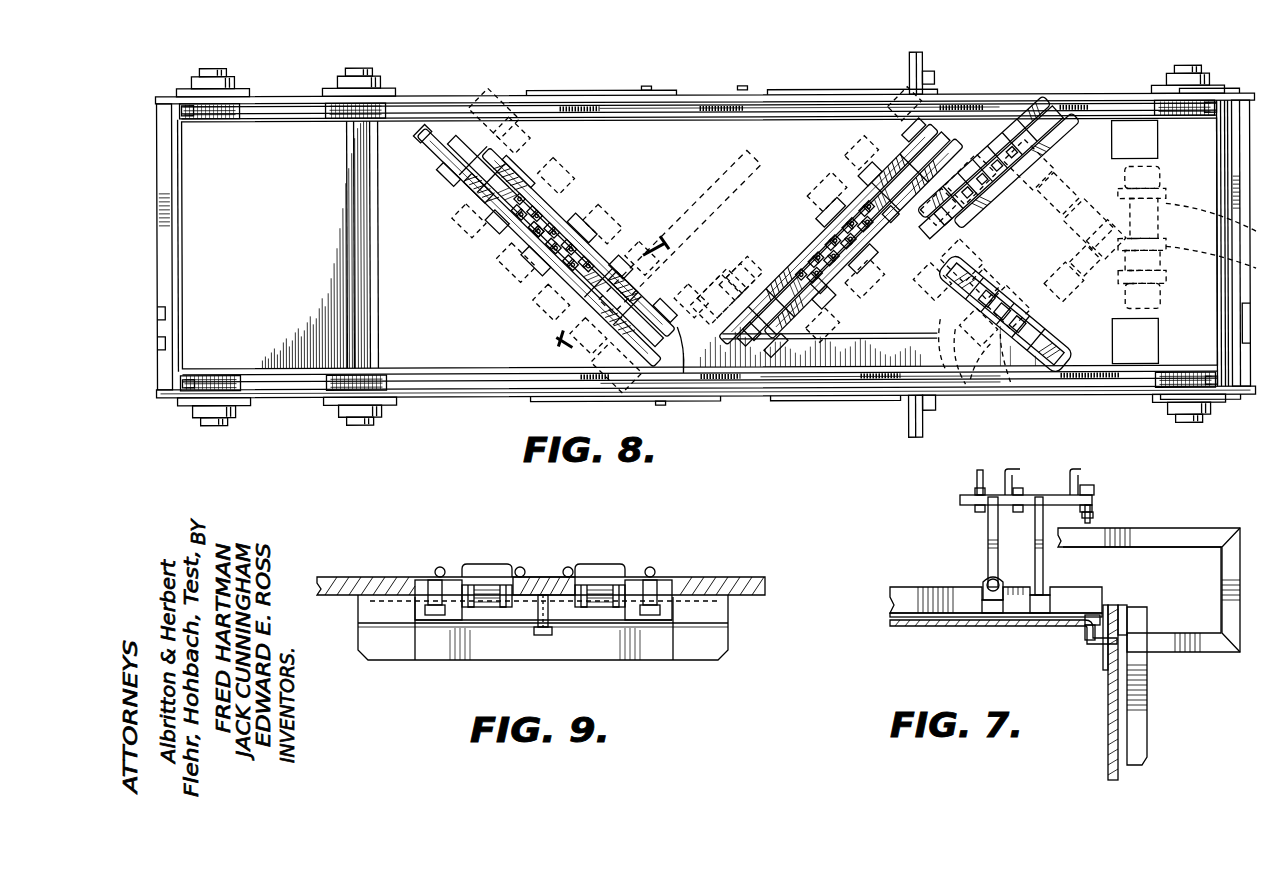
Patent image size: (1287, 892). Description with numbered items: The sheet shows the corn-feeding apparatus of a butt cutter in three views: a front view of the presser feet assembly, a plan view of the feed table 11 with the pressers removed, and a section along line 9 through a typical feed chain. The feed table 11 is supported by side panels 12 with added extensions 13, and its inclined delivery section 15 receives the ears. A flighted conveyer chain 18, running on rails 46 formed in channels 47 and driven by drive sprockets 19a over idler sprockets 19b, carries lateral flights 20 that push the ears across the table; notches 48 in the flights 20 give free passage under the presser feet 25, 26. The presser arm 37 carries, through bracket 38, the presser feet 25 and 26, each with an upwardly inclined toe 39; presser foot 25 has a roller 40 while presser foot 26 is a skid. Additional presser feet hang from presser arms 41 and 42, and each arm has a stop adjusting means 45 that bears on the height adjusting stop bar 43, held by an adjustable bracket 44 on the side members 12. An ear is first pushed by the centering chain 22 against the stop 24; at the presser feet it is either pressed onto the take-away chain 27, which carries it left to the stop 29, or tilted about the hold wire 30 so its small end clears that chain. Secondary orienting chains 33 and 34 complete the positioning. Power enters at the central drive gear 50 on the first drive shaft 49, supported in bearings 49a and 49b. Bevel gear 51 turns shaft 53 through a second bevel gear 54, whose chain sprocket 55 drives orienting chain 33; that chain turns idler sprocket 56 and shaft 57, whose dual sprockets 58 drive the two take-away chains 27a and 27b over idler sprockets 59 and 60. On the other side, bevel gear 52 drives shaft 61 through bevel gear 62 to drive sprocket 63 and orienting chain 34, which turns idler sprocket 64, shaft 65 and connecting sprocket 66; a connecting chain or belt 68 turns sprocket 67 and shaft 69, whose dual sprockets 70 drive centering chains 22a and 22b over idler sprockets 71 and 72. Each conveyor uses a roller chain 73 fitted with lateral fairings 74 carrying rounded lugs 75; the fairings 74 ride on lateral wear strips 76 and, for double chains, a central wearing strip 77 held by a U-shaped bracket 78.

In FIG. 8, the section line 9— 9 is at (612, 297).
In FIG. 8, the feed table 11 is at (657, 132).
In FIG. 9, the feed table 11 is at (750, 577).
In FIG. 7, the feed table 11 is at (910, 627).
In FIG. 8, the side panels 12 is at (1135, 98).
In FIG. 7, the side panels 12 is at (1108, 705).
In FIG. 8, the extensions 13 is at (437, 94).
In FIG. 8, the delivery section 15 is at (292, 120).
In FIG. 8, the chain 18 is at (180, 104).
In FIG. 7, the chain 18 is at (1085, 627).
In FIG. 8, the drive sprockets 19a is at (1208, 96).
In FIG. 8, the idler sprockets 19b is at (185, 95).
In FIG. 8, the flights 20 is at (157, 148).
In FIG. 7, the flights 20 is at (913, 585).
In FIG. 8, the centering chain 22 is at (555, 229).
In FIG. 9, the centering chain 22 is at (684, 560).
In FIG. 8, the centering chain 22a is at (583, 220).
In FIG. 8, the centering chain 22b is at (542, 273).
In FIG. 8, the stop 24 is at (775, 397).
In FIG. 7, the stop 24 is at (1128, 615).
In FIG. 7, the presser foot 25 is at (988, 530).
In FIG. 7, the presser foot 26 is at (1035, 530).
In FIG. 8, the take-away conveyer chain 27 is at (842, 239).
In FIG. 8, the take-away chain 27a is at (825, 198).
In FIG. 8, the take-away chain 27b is at (880, 252).
In FIG. 8, the stop 29 is at (710, 92).
In FIG. 8, the hold wire 30 is at (900, 338).
In FIG. 7, the hold wire 30 is at (1015, 617).
In FIG. 8, the secondary orienting chain 33 is at (995, 150).
In FIG. 8, the secondary orienting chain 34 is at (1010, 367).
In FIG. 7, the presser arm 37 is at (977, 480).
In FIG. 7, the bracket 38 is at (962, 500).
In FIG. 7, the toe 39 is at (988, 548).
In FIG. 7, the roller 40 is at (983, 580).
In FIG. 7, the presser arm 41 is at (1017, 475).
In FIG. 7, the presser arm 42 is at (1078, 475).
In FIG. 8, the height adjusting stop bar 43 is at (910, 72).
In FIG. 7, the height adjusting stop bar 43 is at (1185, 528).
In FIG. 8, the adjustable bracket 44 is at (930, 78).
In FIG. 7, the adjustable bracket 44 is at (1147, 705).
In FIG. 7, the stop adjusting means 45 is at (1093, 487).
In FIG. 8, the rails 46 is at (828, 385).
In FIG. 7, the rails 46 is at (1090, 642).
In FIG. 8, the channels 47 is at (800, 102).
In FIG. 7, the channels 47 is at (1106, 620).
In FIG. 8, the notches 48 is at (160, 308).
In FIG. 7, the notches 48 is at (995, 615).
In FIG. 8, the first drive shaft 49 is at (1254, 232).
In FIG. 8, the bearing 49a is at (1160, 184).
In FIG. 8, the bearing 49b is at (1165, 295).
In FIG. 8, the central drive gear 50 is at (1254, 269).
In FIG. 8, the bevel gear 51 is at (1160, 213).
In FIG. 8, the bevel gear 52 is at (1165, 258).
In FIG. 8, the shaft 53 is at (1070, 165).
In FIG. 8, the second bevel gear 54 is at (1070, 245).
In FIG. 8, the chain sprocket 55 is at (1040, 165).
In FIG. 8, the idler sprocket 56 is at (915, 232).
In FIG. 8, the shaft 57 is at (1040, 242).
In FIG. 8, the dual sprockets 58 is at (955, 123).
In FIG. 8, the idler sprocket 59 is at (825, 297).
In FIG. 8, the idler sprocket 60 is at (760, 270).
In FIG. 8, the shaft 61 is at (1040, 292).
In FIG. 8, the bevel gear 62 is at (1075, 262).
In FIG. 8, the drive sprocket 63 is at (1055, 355).
In FIG. 8, the idler sprocket 64 is at (963, 284).
In FIG. 8, the shaft 65 is at (995, 372).
In FIG. 8, the connecting sprocket 66 is at (960, 377).
In FIG. 8, the sprocket 67 is at (795, 165).
In FIG. 8, the connecting chain or belt 68 is at (825, 172).
In FIG. 8, the shaft 69 is at (755, 208).
In FIG. 8, the dual sprockets 70 is at (677, 338).
In FIG. 8, the idler sprocket 71 is at (523, 188).
In FIG. 8, the idler sprocket 72 is at (442, 130).
In FIG. 9, the roller chain 73 is at (482, 578).
In FIG. 9, the lateral fairings 74 is at (435, 575).
In FIG. 9, the lugs 75 is at (442, 576).
In FIG. 8, the lateral wear strips 76 is at (480, 222).
In FIG. 9, the lateral wear strips 76 is at (435, 575).
In FIG. 8, the central wearing strip 77 is at (580, 315).
In FIG. 9, the central wearing strip 77 is at (534, 620).
In FIG. 8, the U-shaped bracket 78 is at (510, 260).
In FIG. 9, the U-shaped bracket 78 is at (653, 658).